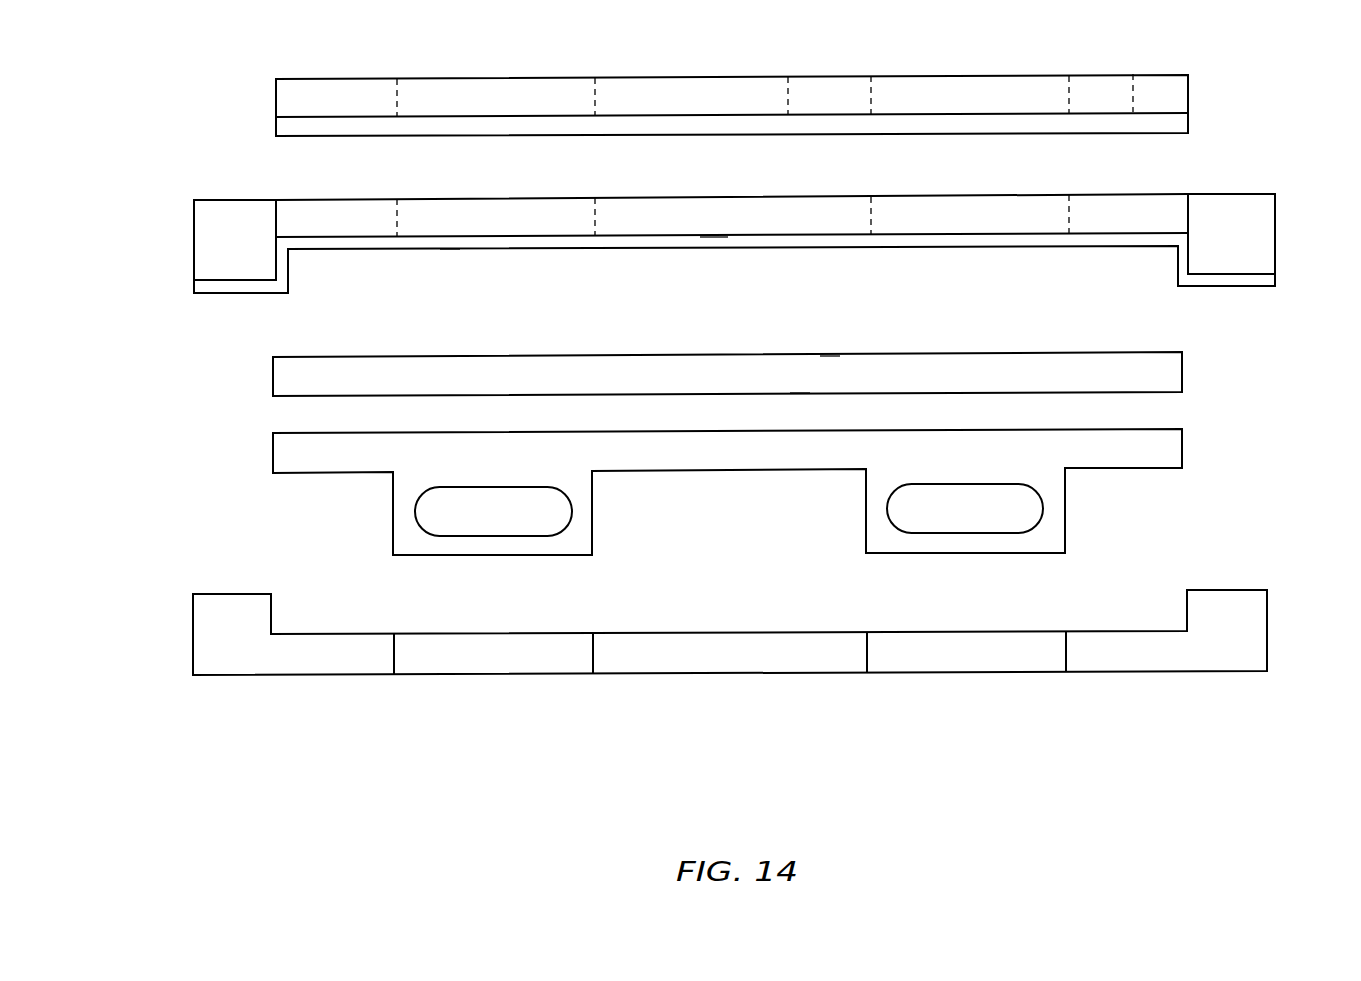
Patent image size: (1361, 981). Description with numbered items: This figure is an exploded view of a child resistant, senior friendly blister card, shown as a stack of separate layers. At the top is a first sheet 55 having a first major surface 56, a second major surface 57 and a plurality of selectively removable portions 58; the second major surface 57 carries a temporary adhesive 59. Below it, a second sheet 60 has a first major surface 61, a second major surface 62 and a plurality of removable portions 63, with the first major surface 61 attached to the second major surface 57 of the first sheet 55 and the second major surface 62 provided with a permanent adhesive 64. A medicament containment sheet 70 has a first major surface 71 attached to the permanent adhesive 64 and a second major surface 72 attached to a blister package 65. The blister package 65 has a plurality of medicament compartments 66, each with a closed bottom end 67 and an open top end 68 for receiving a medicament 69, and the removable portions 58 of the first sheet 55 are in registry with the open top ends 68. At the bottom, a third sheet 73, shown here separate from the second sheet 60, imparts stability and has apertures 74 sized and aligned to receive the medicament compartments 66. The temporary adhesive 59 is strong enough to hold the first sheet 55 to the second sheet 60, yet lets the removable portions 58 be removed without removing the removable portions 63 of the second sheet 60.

The first sheet 55 is at (1188, 90).
The first major surface 56 is at (337, 78).
The second major surface 57 is at (339, 122).
The selectively removable portions 58 is at (505, 85).
The temporary adhesive 59 is at (533, 128).
The second sheet 60 is at (1275, 232).
The first major surface 61 is at (752, 197).
The second major surface 62 is at (728, 237).
The removable portions 63 is at (482, 205).
The permanent adhesive 64 is at (460, 250).
The blister package 65 is at (1173, 445).
The medicament compartments 66 is at (882, 537).
The closed bottom end 67 is at (1040, 550).
The open top end 68 is at (1065, 485).
The medicament 69 is at (925, 500).
The medicament containment sheet 70 is at (1133, 360).
The first major surface 71 is at (828, 353).
The second major surface 72 is at (800, 393).
The third sheet 73 is at (1268, 622).
The apertures 74 is at (470, 660).